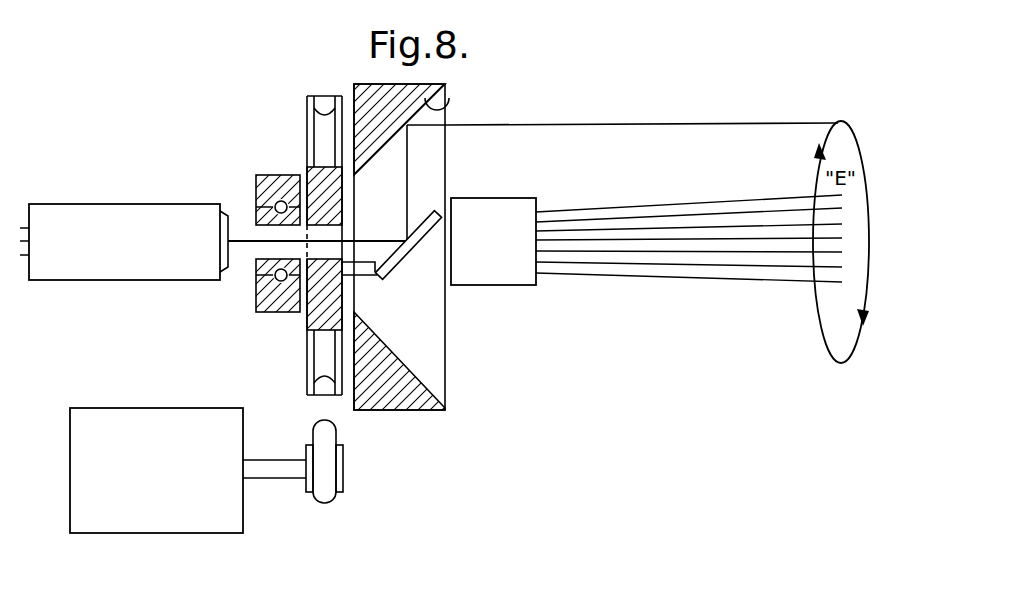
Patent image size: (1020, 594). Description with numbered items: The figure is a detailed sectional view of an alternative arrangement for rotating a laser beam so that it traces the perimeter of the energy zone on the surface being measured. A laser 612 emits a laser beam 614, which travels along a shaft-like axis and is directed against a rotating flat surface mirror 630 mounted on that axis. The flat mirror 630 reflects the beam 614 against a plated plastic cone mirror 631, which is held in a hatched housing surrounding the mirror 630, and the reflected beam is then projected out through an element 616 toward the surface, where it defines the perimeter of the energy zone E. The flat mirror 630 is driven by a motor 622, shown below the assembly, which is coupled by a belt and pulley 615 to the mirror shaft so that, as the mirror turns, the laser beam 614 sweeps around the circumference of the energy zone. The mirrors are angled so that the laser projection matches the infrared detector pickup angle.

The laser 612 is at (124, 214).
The laser beam 614 is at (246, 240).
The drive pulley 615 is at (341, 439).
The lens / optical element 616 is at (510, 198).
The motor 622 is at (142, 425).
The rotating flat surface mirror 630 is at (406, 254).
The plated plastic cone mirror 631 is at (448, 108).